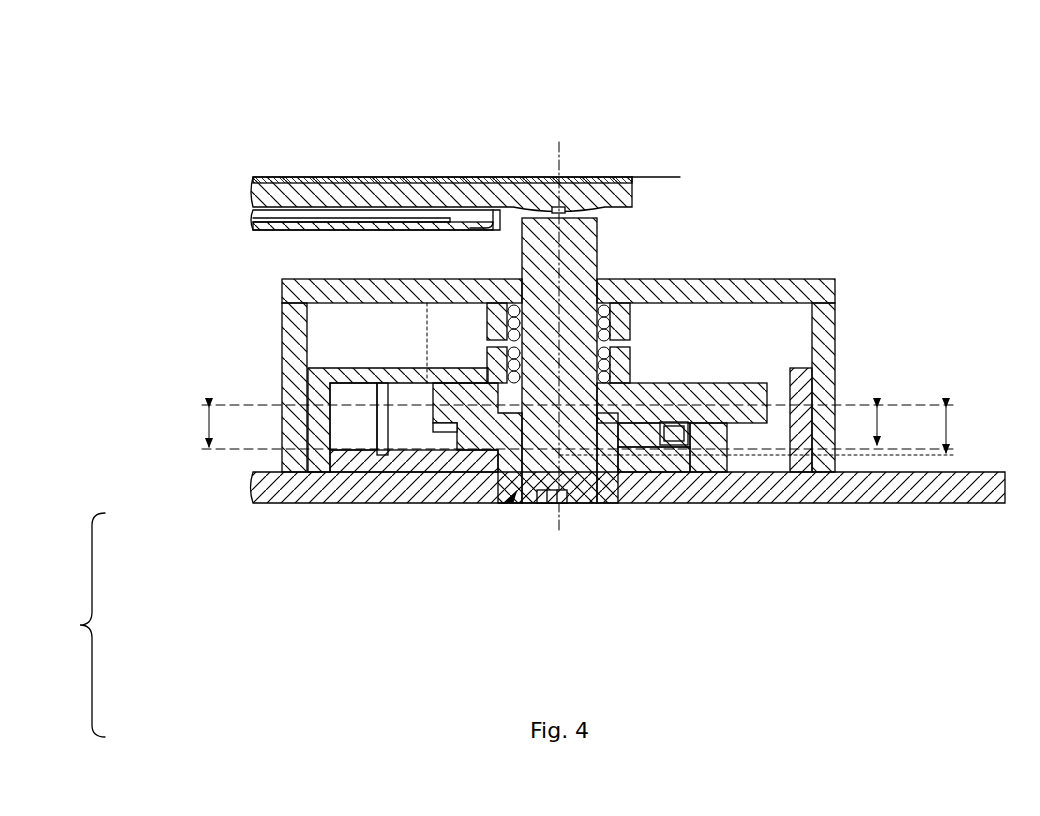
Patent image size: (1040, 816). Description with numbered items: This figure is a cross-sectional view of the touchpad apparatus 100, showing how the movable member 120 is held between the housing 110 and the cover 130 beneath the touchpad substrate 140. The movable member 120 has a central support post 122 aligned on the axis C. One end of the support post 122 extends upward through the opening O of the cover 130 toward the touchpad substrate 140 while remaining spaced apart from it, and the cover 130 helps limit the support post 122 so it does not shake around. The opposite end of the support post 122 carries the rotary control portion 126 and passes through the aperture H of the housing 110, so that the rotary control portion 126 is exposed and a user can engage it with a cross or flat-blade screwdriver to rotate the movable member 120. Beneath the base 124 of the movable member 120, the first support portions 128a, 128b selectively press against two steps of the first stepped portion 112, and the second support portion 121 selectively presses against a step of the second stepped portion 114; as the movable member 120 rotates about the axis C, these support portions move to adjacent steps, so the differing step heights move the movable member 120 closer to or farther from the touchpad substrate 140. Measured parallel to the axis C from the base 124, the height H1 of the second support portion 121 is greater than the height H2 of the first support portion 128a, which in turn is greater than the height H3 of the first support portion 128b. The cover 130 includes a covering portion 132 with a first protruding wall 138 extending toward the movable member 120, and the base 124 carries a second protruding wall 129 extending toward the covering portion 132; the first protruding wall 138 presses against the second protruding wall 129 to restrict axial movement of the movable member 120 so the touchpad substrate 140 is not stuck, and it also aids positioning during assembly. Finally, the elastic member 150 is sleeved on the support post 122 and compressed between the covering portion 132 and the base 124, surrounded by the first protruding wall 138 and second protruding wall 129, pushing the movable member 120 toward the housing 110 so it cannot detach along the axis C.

The touchpad apparatus 100 is at (278, 114).
The housing 110 is at (881, 488).
The first stepped portion 112 is at (644, 448).
The second stepped portion 114 is at (705, 458).
The movable member 120 is at (95, 625).
The second support portion 121 is at (718, 434).
The support post 122 is at (596, 246).
The base 124 is at (400, 503).
The rotary control portion 126 is at (542, 503).
The first support portion 128a is at (456, 503).
The first support portion 128b is at (633, 434).
The second protruding wall 129 is at (621, 362).
The cover 130 is at (830, 346).
The covering portion 132 is at (786, 296).
The first protruding wall 138 is at (622, 325).
The touchpad substrate 140 is at (386, 192).
The elastic member 150 is at (507, 347).
The axis C is at (559, 148).
The opening O is at (514, 292).
The aperture H is at (506, 504).
The height of the second support portion H1 is at (774, 431).
The height of the first support portion 128a H2 is at (559, 427).
The height of the first support portion 128b H3 is at (897, 426).